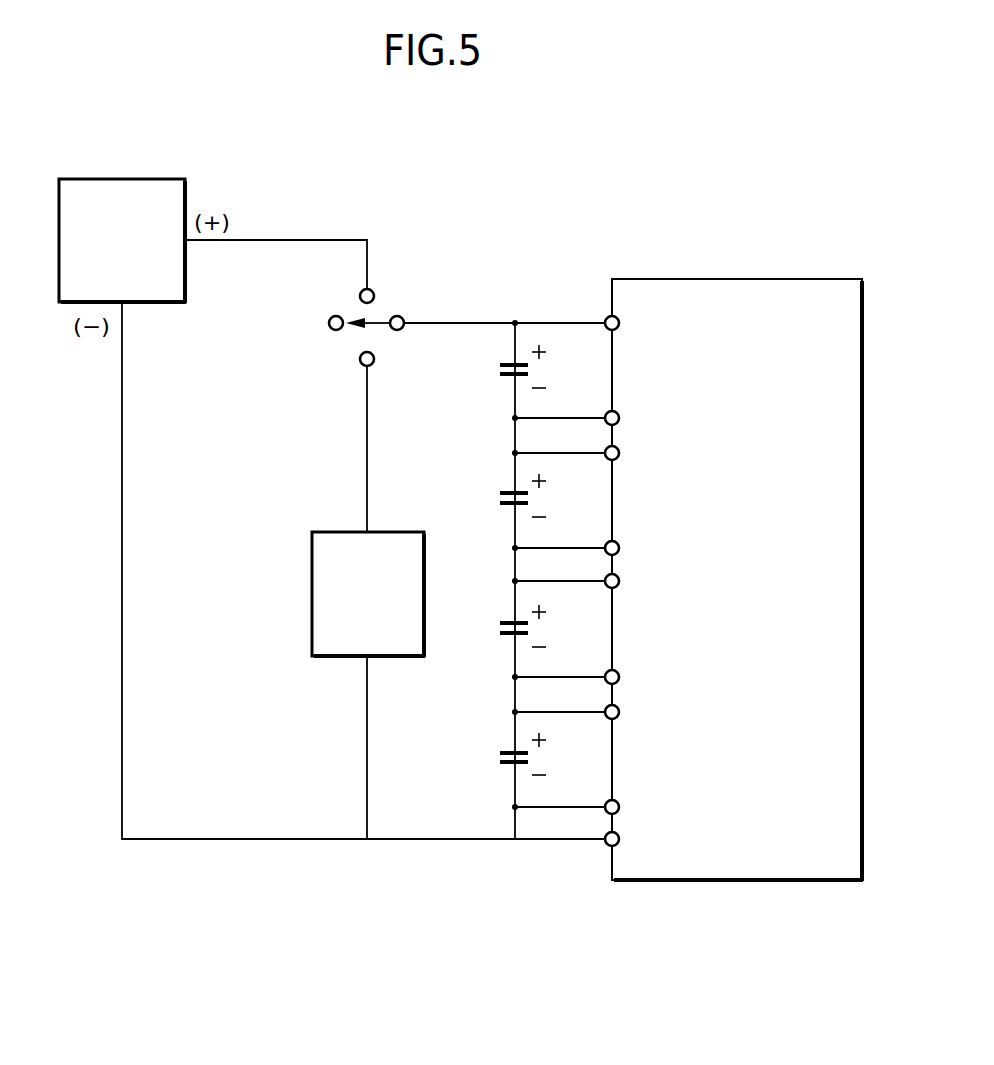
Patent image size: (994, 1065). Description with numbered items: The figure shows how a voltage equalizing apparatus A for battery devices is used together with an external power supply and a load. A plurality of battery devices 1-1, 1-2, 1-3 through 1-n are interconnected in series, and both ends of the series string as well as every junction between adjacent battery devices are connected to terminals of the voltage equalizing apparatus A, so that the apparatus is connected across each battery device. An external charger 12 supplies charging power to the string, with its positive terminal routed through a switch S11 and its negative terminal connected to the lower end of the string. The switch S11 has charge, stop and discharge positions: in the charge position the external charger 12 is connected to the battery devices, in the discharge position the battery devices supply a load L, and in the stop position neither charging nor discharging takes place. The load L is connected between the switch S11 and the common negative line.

The external charger 12 is at (112, 178).
The switch S11 is at (378, 323).
The load L is at (388, 531).
The battery device 1-1 is at (507, 362).
The battery device 1-2 is at (507, 491).
The battery device 1-3 is at (507, 621).
The battery device 1-n is at (507, 751).
The voltage equalizing apparatus A is at (735, 278).